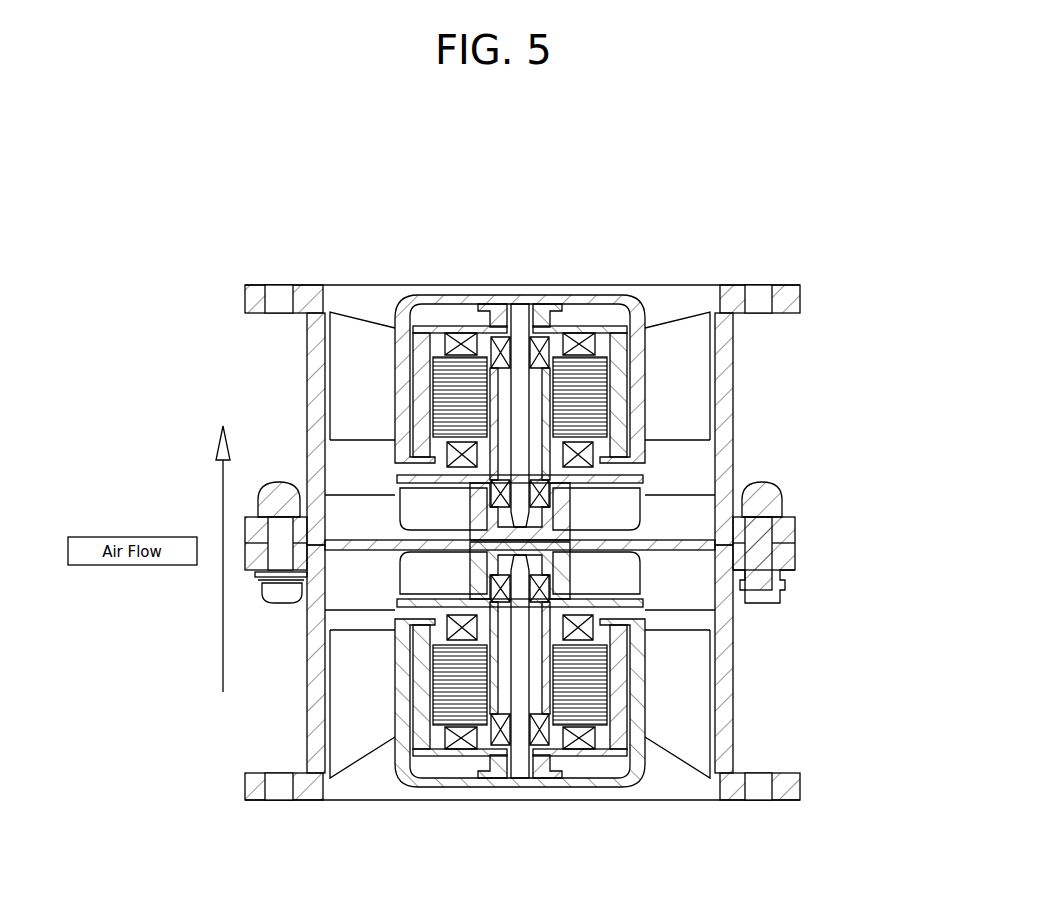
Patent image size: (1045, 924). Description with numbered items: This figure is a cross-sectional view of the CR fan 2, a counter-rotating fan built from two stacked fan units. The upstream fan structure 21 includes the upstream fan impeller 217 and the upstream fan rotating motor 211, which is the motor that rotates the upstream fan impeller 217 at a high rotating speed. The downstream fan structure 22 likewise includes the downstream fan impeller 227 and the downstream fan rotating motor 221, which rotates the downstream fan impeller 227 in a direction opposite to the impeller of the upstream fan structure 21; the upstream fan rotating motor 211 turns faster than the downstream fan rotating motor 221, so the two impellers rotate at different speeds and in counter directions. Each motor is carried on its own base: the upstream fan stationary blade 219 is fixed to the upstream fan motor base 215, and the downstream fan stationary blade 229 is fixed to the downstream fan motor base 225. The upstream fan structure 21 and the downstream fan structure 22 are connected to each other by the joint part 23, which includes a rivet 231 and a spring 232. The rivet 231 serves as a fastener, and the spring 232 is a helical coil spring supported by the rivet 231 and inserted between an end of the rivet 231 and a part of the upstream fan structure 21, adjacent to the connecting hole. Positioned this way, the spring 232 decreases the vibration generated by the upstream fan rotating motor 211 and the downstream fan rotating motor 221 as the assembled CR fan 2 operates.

The CR fan 2 is at (535, 493).
The upstream fan structure 21 is at (722, 712).
The downstream fan structure 22 is at (722, 368).
The joint part 23 is at (793, 590).
The upstream fan rotating motor 211 is at (580, 752).
The upstream fan motor base 215 is at (633, 548).
The upstream fan impeller 217 is at (408, 766).
The upstream fan stationary blade 219 is at (335, 588).
The downstream fan rotating motor 221 is at (585, 317).
The downstream fan motor base 225 is at (641, 514).
The downstream fan impeller 227 is at (400, 296).
The downstream fan stationary blade 229 is at (355, 510).
The rivet 231 is at (752, 588).
The spring 232 is at (280, 578).